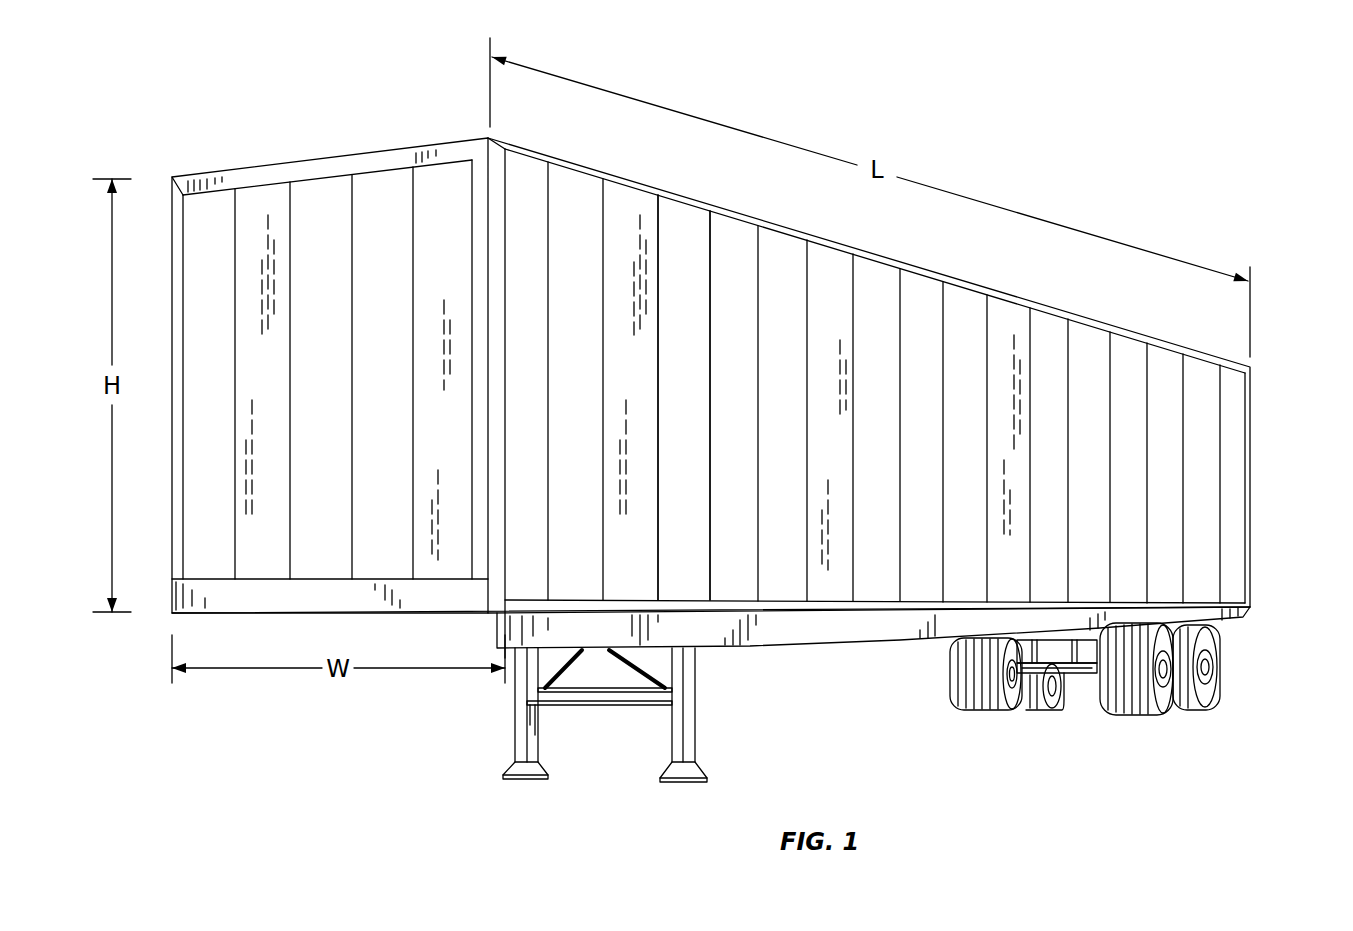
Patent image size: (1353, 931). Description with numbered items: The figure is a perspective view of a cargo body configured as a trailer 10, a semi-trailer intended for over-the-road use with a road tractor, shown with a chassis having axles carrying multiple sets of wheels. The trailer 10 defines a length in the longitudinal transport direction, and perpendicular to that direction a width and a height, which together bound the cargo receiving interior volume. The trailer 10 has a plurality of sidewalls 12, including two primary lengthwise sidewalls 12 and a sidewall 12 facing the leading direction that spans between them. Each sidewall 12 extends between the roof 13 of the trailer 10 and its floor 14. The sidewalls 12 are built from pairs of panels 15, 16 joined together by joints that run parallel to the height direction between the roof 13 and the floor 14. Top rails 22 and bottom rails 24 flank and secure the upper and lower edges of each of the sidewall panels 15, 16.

The trailer 10 is at (1085, 152).
The sidewall 12 is at (222, 548).
The roof 13 is at (410, 144).
The floor 14 is at (787, 652).
The panel 15 is at (673, 537).
The panel 16 is at (723, 538).
The top rail 22 is at (280, 172).
The bottom rail 24 is at (843, 605).